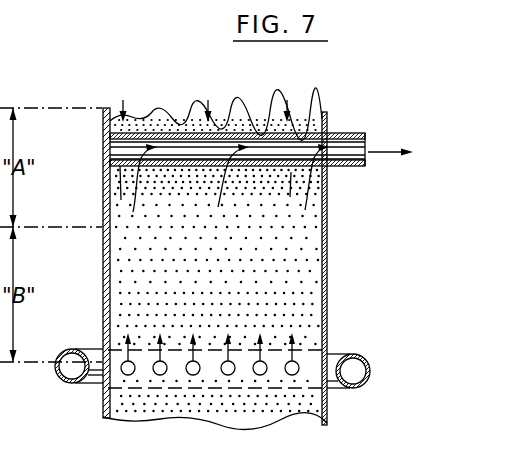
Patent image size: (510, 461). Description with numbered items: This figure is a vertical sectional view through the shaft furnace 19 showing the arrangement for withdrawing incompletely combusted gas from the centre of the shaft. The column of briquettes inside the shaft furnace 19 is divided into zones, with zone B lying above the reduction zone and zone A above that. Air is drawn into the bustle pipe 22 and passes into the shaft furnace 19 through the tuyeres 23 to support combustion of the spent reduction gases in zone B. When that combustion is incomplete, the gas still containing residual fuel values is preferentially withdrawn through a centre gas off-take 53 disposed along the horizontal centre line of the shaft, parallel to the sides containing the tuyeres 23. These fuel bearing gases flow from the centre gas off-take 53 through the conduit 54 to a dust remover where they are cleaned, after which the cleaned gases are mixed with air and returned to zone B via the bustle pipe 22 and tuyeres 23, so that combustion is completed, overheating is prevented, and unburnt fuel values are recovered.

The shaft furnace 19 is at (327, 282).
The bustle pipe 22 is at (71, 384).
The tuyeres 23 is at (130, 375).
The centre gas off-take 53 is at (232, 134).
The conduit 54 is at (350, 136).